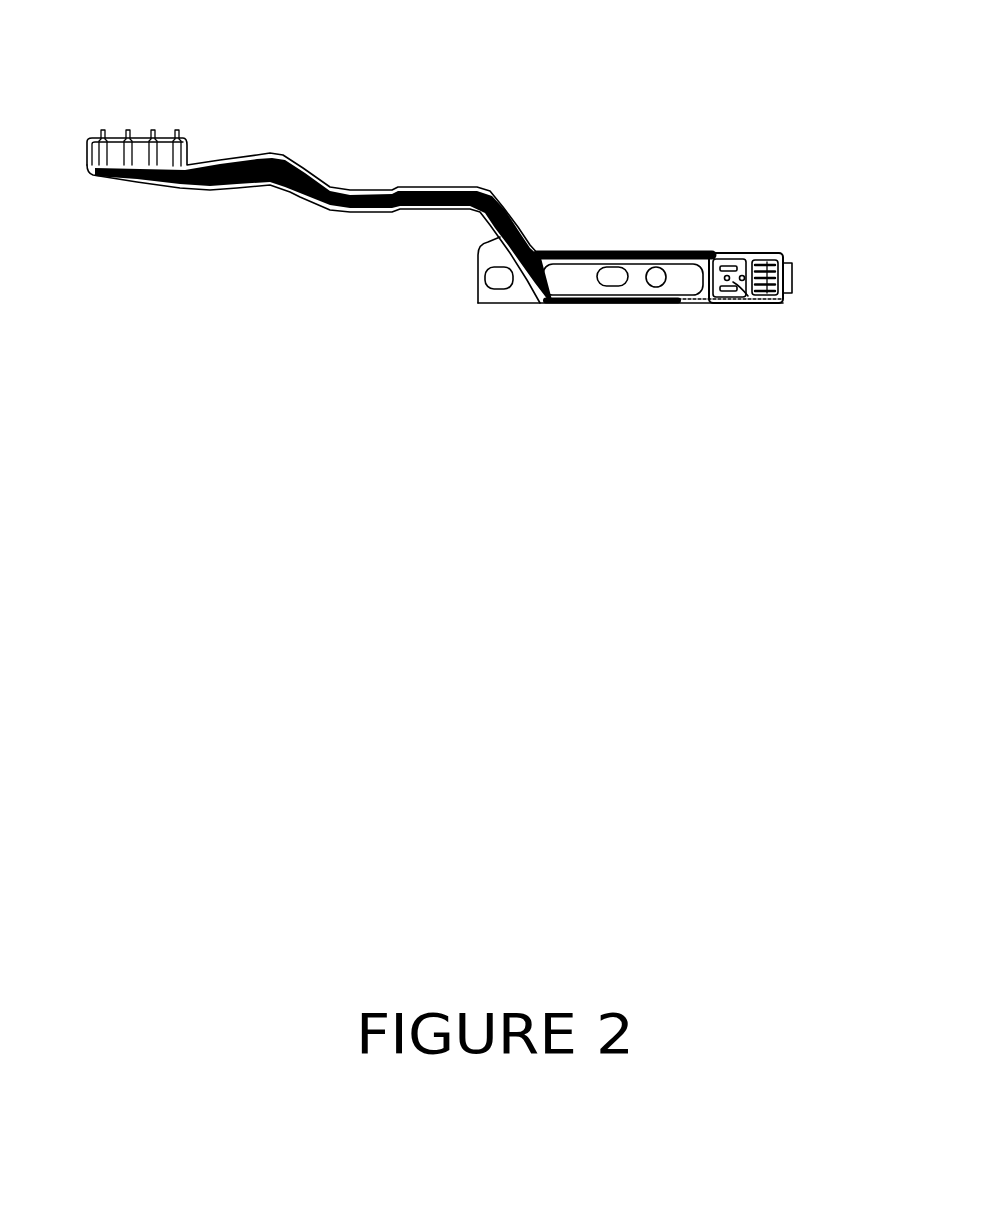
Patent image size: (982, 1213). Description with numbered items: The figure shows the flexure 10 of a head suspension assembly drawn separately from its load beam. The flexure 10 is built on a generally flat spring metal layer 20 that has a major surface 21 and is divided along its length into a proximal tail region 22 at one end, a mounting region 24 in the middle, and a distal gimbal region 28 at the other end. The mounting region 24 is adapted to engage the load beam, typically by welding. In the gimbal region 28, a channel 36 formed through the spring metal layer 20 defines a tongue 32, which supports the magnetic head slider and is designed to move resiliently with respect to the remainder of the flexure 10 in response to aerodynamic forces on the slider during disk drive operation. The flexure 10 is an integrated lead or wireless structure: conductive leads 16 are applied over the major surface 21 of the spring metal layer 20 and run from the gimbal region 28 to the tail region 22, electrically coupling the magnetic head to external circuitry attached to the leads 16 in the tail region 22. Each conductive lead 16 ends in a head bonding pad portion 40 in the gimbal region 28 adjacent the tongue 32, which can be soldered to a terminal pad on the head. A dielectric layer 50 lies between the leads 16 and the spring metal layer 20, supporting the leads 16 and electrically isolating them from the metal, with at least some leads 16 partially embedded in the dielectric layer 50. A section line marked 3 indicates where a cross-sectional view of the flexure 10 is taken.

The flexure 10 is at (388, 112).
The proximal tail region 22 is at (186, 165).
The dielectric layer 50 is at (538, 243).
The section line 3- 3 is at (580, 281).
The major surface 21 is at (593, 250).
The conductive leads 16 is at (652, 244).
The head bonding pad portion 40 is at (777, 242).
The distal gimbal region 28 is at (786, 243).
The spring metal layer 20 is at (478, 309).
The mounting region 24 is at (525, 303).
The channel 36 is at (710, 303).
The tongue 32 is at (750, 303).